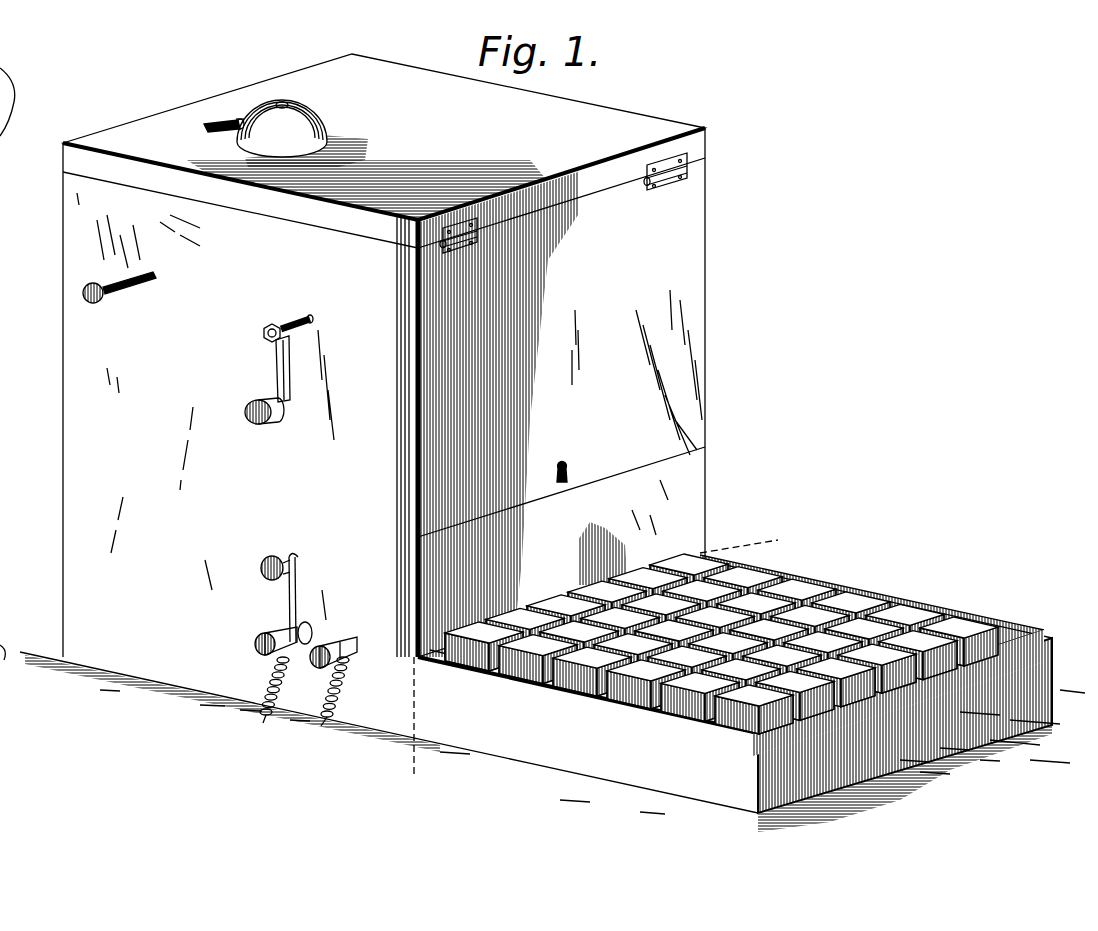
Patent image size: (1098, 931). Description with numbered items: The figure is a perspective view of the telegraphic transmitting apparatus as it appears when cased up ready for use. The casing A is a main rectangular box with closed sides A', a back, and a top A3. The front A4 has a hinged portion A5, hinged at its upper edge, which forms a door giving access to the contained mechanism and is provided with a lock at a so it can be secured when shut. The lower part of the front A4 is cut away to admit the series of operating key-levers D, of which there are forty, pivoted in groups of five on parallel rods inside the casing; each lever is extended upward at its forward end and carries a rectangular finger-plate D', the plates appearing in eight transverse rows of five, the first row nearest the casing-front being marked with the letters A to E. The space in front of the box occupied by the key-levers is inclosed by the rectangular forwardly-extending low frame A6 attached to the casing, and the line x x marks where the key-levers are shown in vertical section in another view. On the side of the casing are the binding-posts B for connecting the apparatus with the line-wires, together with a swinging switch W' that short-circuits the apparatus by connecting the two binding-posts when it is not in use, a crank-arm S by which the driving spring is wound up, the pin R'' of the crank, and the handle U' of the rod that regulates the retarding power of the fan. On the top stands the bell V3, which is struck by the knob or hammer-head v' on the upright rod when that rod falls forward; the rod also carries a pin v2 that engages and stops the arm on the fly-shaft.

The casing A is at (379, 355).
The sides A' is at (243, 425).
The top A3 is at (366, 178).
The front A4 is at (561, 516).
The hinged portion A5 is at (561, 414).
The forwardly-extending low frame A6 is at (552, 697).
The lock a is at (570, 468).
The binding-posts B is at (333, 639).
The key-levers D is at (721, 646).
The finger-plate D' is at (737, 655).
The frame R'' is at (299, 323).
The crank-arm S is at (267, 374).
The handle U' is at (119, 297).
The bell V3 is at (302, 134).
The knob or hammer-head v' is at (237, 114).
The pin v2 is at (236, 127).
The swinging switch W' is at (275, 598).
The section line x x is at (595, 663).